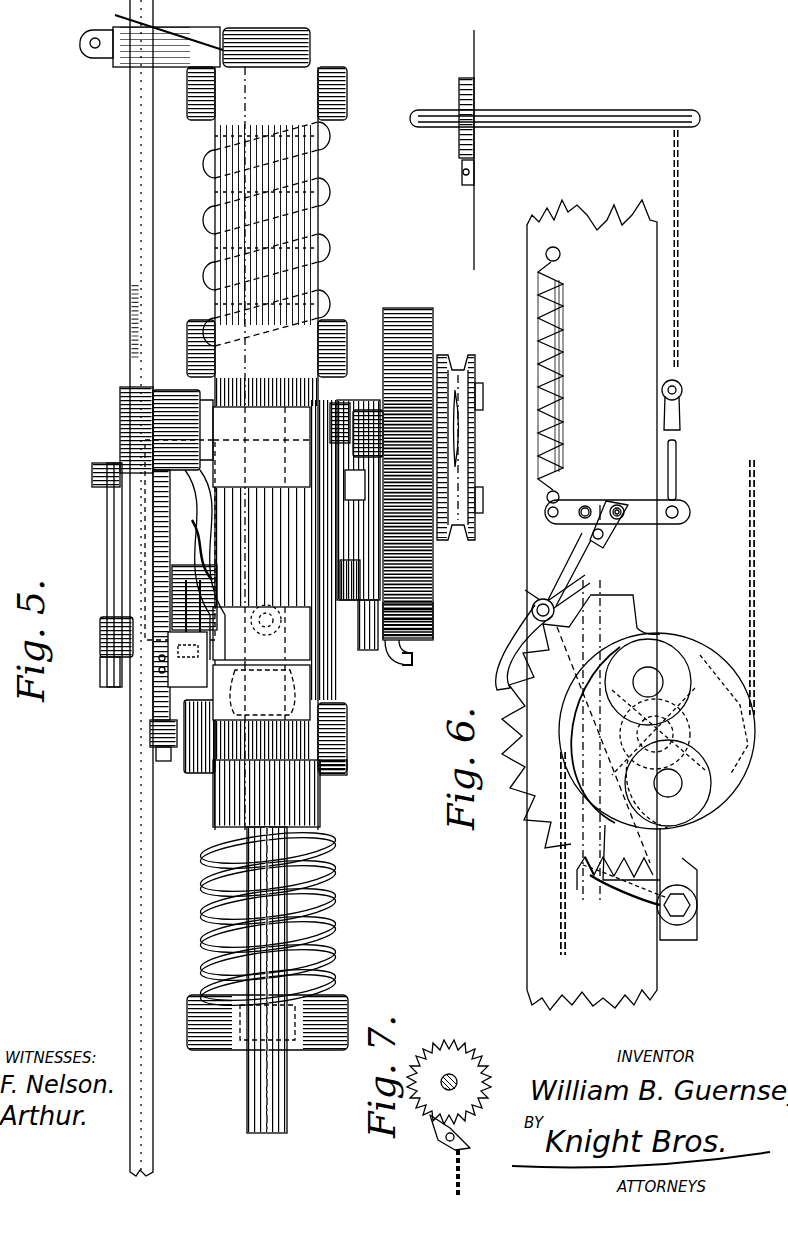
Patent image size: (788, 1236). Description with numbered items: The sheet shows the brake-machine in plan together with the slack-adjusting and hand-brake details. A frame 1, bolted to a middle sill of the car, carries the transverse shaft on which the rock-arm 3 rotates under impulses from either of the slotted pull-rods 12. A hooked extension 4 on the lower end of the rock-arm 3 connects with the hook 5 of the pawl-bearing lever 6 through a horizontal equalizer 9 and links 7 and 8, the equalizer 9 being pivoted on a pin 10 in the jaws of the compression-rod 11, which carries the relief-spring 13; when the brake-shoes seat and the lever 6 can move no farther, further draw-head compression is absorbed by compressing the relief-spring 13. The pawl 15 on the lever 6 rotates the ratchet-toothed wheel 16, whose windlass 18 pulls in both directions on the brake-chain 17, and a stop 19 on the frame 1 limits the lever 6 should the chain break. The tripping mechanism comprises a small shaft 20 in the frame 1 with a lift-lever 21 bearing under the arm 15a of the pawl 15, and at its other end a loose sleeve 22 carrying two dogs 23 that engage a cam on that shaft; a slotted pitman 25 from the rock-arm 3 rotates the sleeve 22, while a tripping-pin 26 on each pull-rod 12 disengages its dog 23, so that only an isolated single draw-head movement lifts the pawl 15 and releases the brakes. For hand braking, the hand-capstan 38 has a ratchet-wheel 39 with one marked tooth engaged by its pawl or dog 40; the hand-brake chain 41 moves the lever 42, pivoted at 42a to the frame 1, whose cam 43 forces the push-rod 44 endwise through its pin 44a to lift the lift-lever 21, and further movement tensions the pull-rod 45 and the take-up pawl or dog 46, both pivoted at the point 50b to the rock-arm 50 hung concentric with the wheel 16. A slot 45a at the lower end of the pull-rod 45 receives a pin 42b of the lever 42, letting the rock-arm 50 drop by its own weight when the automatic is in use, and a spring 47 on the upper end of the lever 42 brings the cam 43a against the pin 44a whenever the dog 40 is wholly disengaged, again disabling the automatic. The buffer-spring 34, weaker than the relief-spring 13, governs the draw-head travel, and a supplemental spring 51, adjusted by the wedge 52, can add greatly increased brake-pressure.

In FIG. 5, the frame 1 is at (250, 32).
In FIG. 6, the frame 1 is at (592, 605).
In FIG. 5, the rock-arm 3 is at (167, 553).
In FIG. 5, the hooked extension 4 is at (409, 647).
In FIG. 6, the hook 5 is at (740, 680).
In FIG. 5, the pawl-bearing lever 6 is at (360, 653).
In FIG. 5, the link 7 is at (192, 550).
In FIG. 5, the link 8 is at (373, 410).
In FIG. 5, the horizontal equalizer 9 is at (192, 592).
In FIG. 5, the pin 10 is at (267, 615).
In FIG. 5, the compression-rod 11 is at (286, 1072).
In FIG. 5, the pull-rod 12 is at (135, 213).
In FIG. 5, the relief-spring 13 is at (334, 908).
In FIG. 5, the pawl 15 is at (424, 628).
In FIG. 6, the pawl 15 is at (613, 900).
In FIG. 6, the arm of pawl 15a is at (592, 909).
In FIG. 5, the ratchet-toothed wheel 16 is at (433, 575).
In FIG. 6, the ratchet-toothed wheel 16 is at (517, 803).
In FIG. 6, the brake-chain 17 is at (748, 572).
In FIG. 5, the windlass 18 is at (475, 428).
In FIG. 6, the windlass 18 is at (480, 447).
In FIG. 5, the stop 19 is at (355, 412).
In FIG. 5, the small shaft 20 is at (100, 633).
In FIG. 6, the small shaft 20 is at (662, 922).
In FIG. 5, the lift-lever 21 is at (327, 583).
In FIG. 6, the lift-lever 21 is at (593, 893).
In FIG. 5, the loose sleeve 22 is at (117, 617).
In FIG. 5, the dogs 23 is at (183, 633).
In FIG. 5, the slotted pitman 25 is at (112, 563).
In FIG. 5, the tripping-pin 26 is at (184, 568).
In FIG. 7, the buffer-spring 34 is at (442, 1046).
In FIG. 6, the hand-capstan 38 is at (437, 110).
In FIG. 7, the hand-capstan 38 is at (449, 1078).
In FIG. 6, the ratchet-wheel 39 is at (472, 77).
In FIG. 6, the pawl or dog 40 is at (472, 182).
In FIG. 7, the pawl or dog 40 is at (447, 1142).
In FIG. 6, the hand-brake chain 41 is at (678, 314).
In FIG. 6, the lever 42 is at (638, 498).
In FIG. 6, the pivot 42a is at (583, 506).
In FIG. 6, the pin 42b is at (614, 504).
In FIG. 6, the cam 43 is at (572, 536).
In FIG. 6, the cam 43a is at (612, 527).
In FIG. 6, the push-rod 44 is at (598, 540).
In FIG. 6, the pin 44a is at (548, 530).
In FIG. 6, the pull-rod 45 is at (547, 574).
In FIG. 6, the slot 45a is at (600, 503).
In FIG. 6, the take-up pawl or dog 46 is at (507, 650).
In FIG. 6, the spring 47 is at (562, 380).
In FIG. 6, the rock-arm 50 is at (553, 612).
In FIG. 6, the pivot point 50b is at (525, 588).
In FIG. 5, the supplemental spring 51 is at (328, 196).
In FIG. 5, the wedge 52 is at (180, 44).